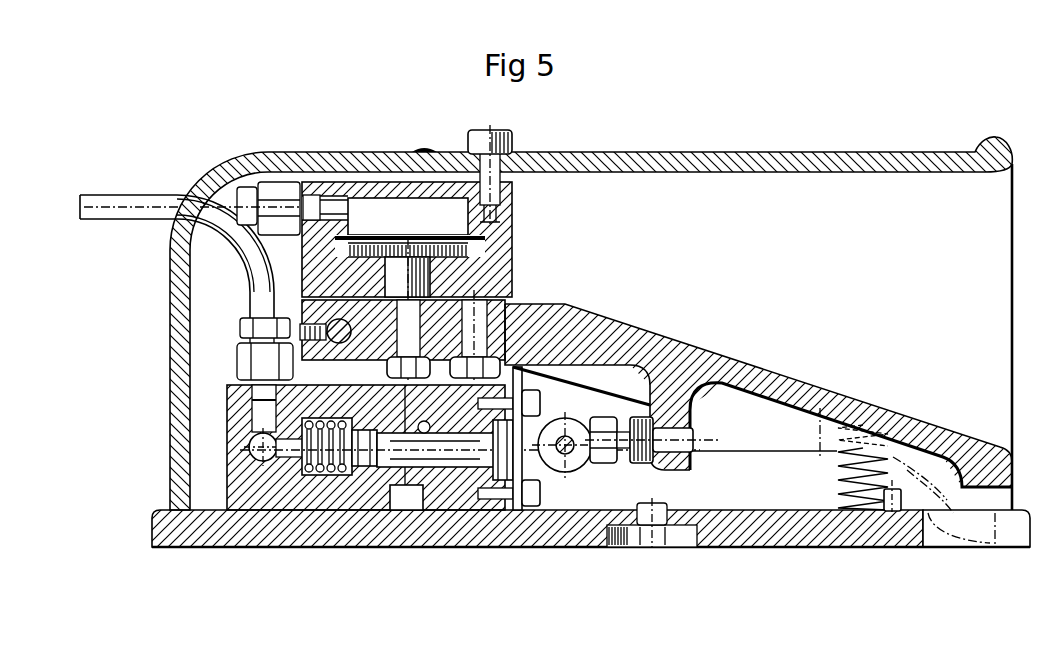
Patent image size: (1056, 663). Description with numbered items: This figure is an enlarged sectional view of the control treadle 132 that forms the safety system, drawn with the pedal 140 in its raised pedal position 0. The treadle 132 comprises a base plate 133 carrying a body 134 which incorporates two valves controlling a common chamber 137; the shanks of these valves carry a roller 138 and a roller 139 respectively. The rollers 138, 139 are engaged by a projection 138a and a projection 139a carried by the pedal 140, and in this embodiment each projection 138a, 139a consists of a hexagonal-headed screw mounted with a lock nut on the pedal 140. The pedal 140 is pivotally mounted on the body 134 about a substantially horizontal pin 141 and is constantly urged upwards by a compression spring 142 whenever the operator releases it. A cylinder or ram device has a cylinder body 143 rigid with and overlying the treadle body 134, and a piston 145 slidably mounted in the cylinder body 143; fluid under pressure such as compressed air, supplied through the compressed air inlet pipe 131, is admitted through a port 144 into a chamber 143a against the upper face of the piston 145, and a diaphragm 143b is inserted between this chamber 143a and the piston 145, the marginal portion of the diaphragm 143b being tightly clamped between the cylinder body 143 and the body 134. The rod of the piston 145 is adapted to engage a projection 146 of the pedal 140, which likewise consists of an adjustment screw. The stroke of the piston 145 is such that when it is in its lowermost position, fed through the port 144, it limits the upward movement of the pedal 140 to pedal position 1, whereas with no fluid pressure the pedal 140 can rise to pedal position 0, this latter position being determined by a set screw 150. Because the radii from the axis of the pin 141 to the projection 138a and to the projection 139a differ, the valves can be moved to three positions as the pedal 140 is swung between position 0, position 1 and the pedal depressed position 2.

The compressed air inlet pipe 131 is at (115, 222).
The control treadle 132 is at (167, 452).
The base plate 133 is at (547, 530).
The body 134 is at (367, 370).
The common chamber 137 is at (250, 440).
The roller 138 is at (568, 465).
The projection 138a is at (684, 424).
The roller 139 is at (570, 440).
The projection 139a is at (606, 418).
The pedal 140 is at (710, 378).
The pin 141 is at (318, 325).
The compression spring 142 is at (843, 477).
The cylinder body 143 is at (500, 243).
The chamber 143a is at (382, 220).
The diaphragm 143b is at (450, 240).
The port 144 is at (310, 200).
The piston 145 is at (513, 271).
The projection 146 is at (528, 305).
The set screw 150 is at (600, 315).
The pedal position 0 is at (1012, 447).
The pedal position 1 is at (1012, 482).
The pedal depressed position 2 is at (1017, 526).